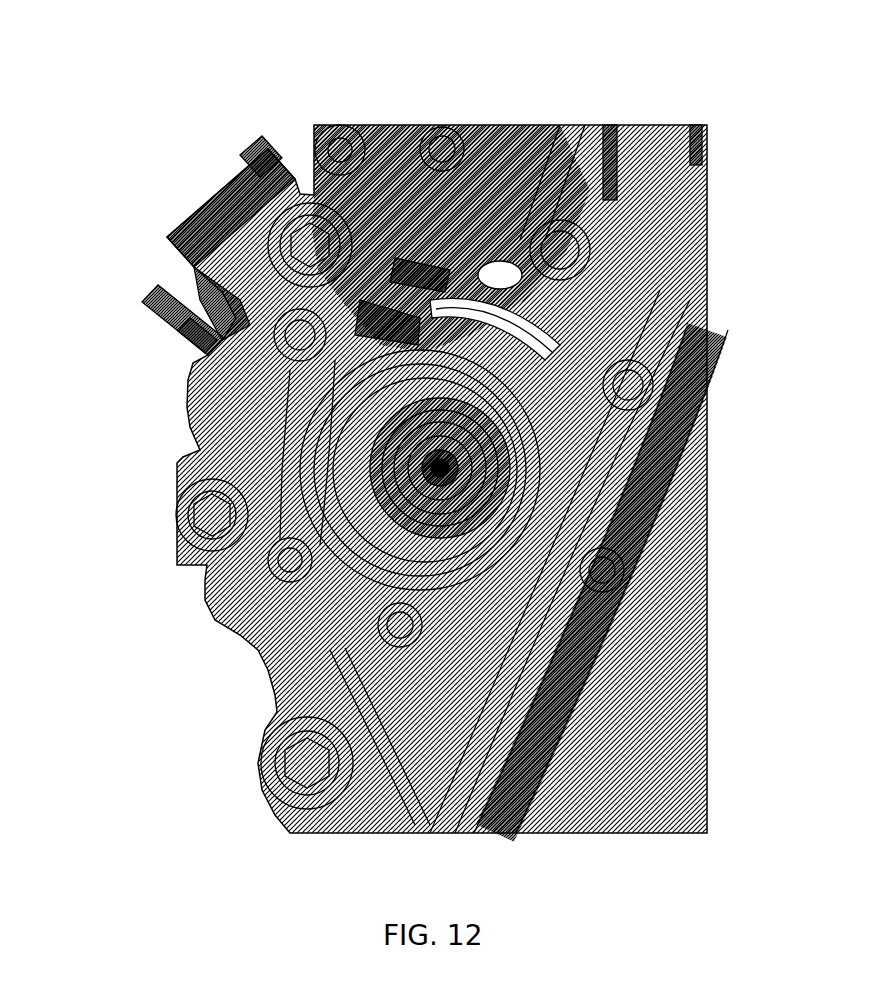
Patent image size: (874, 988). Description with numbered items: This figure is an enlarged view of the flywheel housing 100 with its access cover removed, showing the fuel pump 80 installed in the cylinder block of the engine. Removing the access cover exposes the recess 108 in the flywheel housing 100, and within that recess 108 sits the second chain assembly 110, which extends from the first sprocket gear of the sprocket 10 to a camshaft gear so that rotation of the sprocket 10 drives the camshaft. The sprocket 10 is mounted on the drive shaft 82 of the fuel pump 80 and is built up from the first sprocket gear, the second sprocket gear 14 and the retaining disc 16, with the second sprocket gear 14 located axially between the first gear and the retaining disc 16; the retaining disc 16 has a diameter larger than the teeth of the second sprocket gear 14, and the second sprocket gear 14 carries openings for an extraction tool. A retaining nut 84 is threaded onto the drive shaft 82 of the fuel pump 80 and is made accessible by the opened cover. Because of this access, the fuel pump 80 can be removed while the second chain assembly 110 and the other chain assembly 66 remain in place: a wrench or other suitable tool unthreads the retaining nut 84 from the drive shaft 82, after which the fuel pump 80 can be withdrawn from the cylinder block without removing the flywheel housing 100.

The sprocket 10 is at (537, 288).
The second sprocket gear 14 is at (520, 438).
The retaining disc 16 is at (343, 324).
The chain assembly 66 is at (545, 346).
The fuel pump 80 is at (166, 237).
The drive shaft 82 is at (440, 479).
The retaining nut 84 is at (478, 470).
The flywheel housing 100 is at (712, 570).
The recess 108 is at (420, 277).
The second chain assembly 110 is at (410, 332).